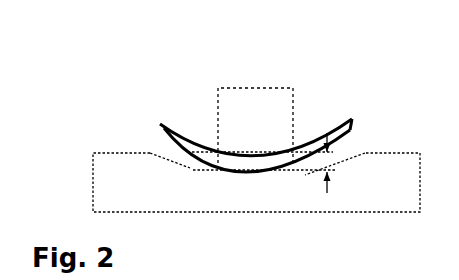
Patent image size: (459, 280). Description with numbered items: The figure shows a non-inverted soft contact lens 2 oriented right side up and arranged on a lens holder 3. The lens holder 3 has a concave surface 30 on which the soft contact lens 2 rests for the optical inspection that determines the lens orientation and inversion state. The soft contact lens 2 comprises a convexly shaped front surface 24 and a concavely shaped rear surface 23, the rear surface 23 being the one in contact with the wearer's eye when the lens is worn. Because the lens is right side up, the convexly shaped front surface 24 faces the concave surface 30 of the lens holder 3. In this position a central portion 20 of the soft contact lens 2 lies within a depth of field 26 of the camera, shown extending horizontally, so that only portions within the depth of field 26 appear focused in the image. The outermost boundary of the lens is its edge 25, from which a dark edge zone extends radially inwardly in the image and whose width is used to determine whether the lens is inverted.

The soft contact lens 2 is at (218, 97).
The lens holder 3 is at (392, 153).
The central portion 20 is at (257, 88).
The rear surface 23 is at (181, 135).
The front surface 24 is at (176, 128).
The edge 25 is at (350, 120).
The depth of field 26 is at (322, 174).
The concave surface 30 is at (353, 160).